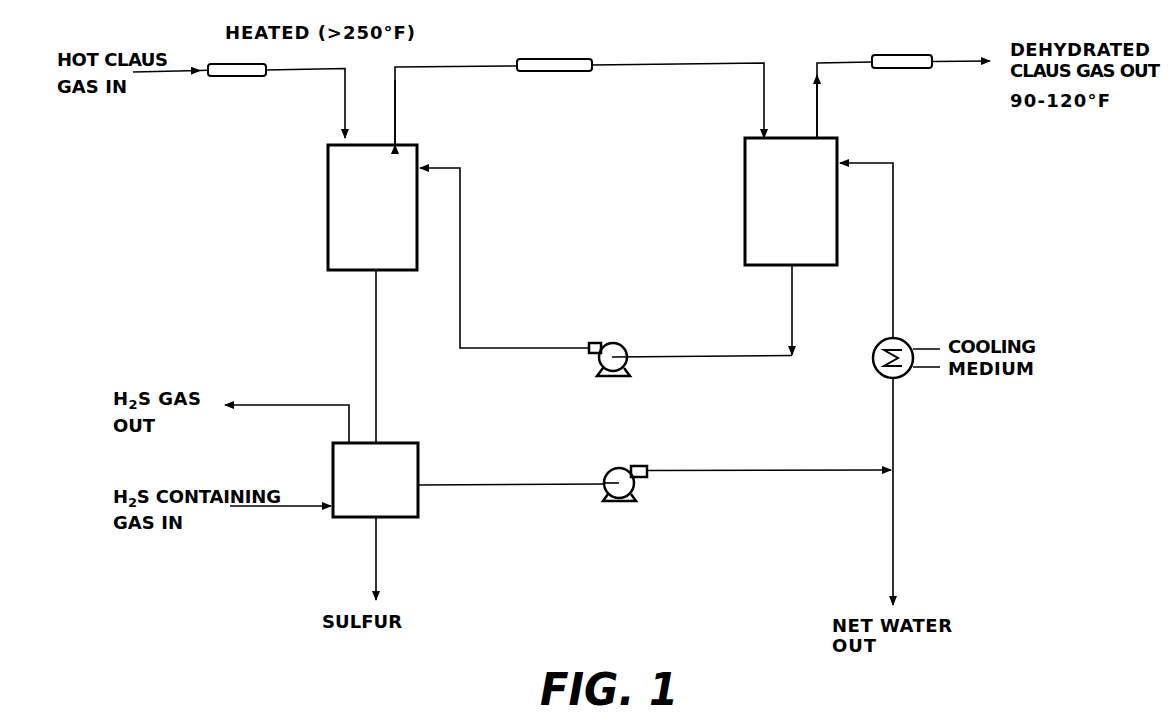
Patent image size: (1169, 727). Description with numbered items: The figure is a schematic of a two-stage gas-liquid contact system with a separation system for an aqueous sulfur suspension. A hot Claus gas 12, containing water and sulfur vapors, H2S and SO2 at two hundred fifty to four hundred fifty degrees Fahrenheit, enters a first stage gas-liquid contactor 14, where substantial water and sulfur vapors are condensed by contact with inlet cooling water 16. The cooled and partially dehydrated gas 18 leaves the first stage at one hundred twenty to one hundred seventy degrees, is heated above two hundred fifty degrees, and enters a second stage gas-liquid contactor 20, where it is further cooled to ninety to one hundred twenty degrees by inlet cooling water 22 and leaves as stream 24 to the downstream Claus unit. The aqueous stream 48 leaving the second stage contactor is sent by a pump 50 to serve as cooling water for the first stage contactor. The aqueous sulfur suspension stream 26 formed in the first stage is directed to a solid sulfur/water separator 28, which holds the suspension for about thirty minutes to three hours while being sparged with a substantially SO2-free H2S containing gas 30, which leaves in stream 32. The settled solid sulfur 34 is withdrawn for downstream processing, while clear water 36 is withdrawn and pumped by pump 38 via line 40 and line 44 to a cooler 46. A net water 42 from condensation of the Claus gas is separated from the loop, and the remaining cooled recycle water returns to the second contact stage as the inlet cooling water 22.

The Claus gas 12 is at (180, 73).
The first stage gas-liquid contactor 14 is at (386, 219).
The inlet cooling water 16 is at (461, 192).
The cooled and partially dehydrated gas 18 is at (494, 70).
The second stage gas-liquid contactor 20 is at (802, 214).
The inlet cooling water 22 is at (894, 188).
The stream 24 is at (959, 64).
The aqueous sulfur suspension stream 26 is at (378, 331).
The solid sulfur/water separator 28 is at (388, 490).
The H2S containing gas 30 is at (298, 508).
The stream 32 is at (274, 407).
The settled solid sulfur 34 is at (378, 568).
The clear water 36 is at (480, 483).
The pump 38 is at (618, 462).
The line 40 is at (748, 468).
The net water 42 is at (897, 536).
The line 44 is at (897, 427).
The cooler 46 is at (905, 338).
The aqueous stream 48 is at (790, 328).
The pump 50 is at (624, 342).